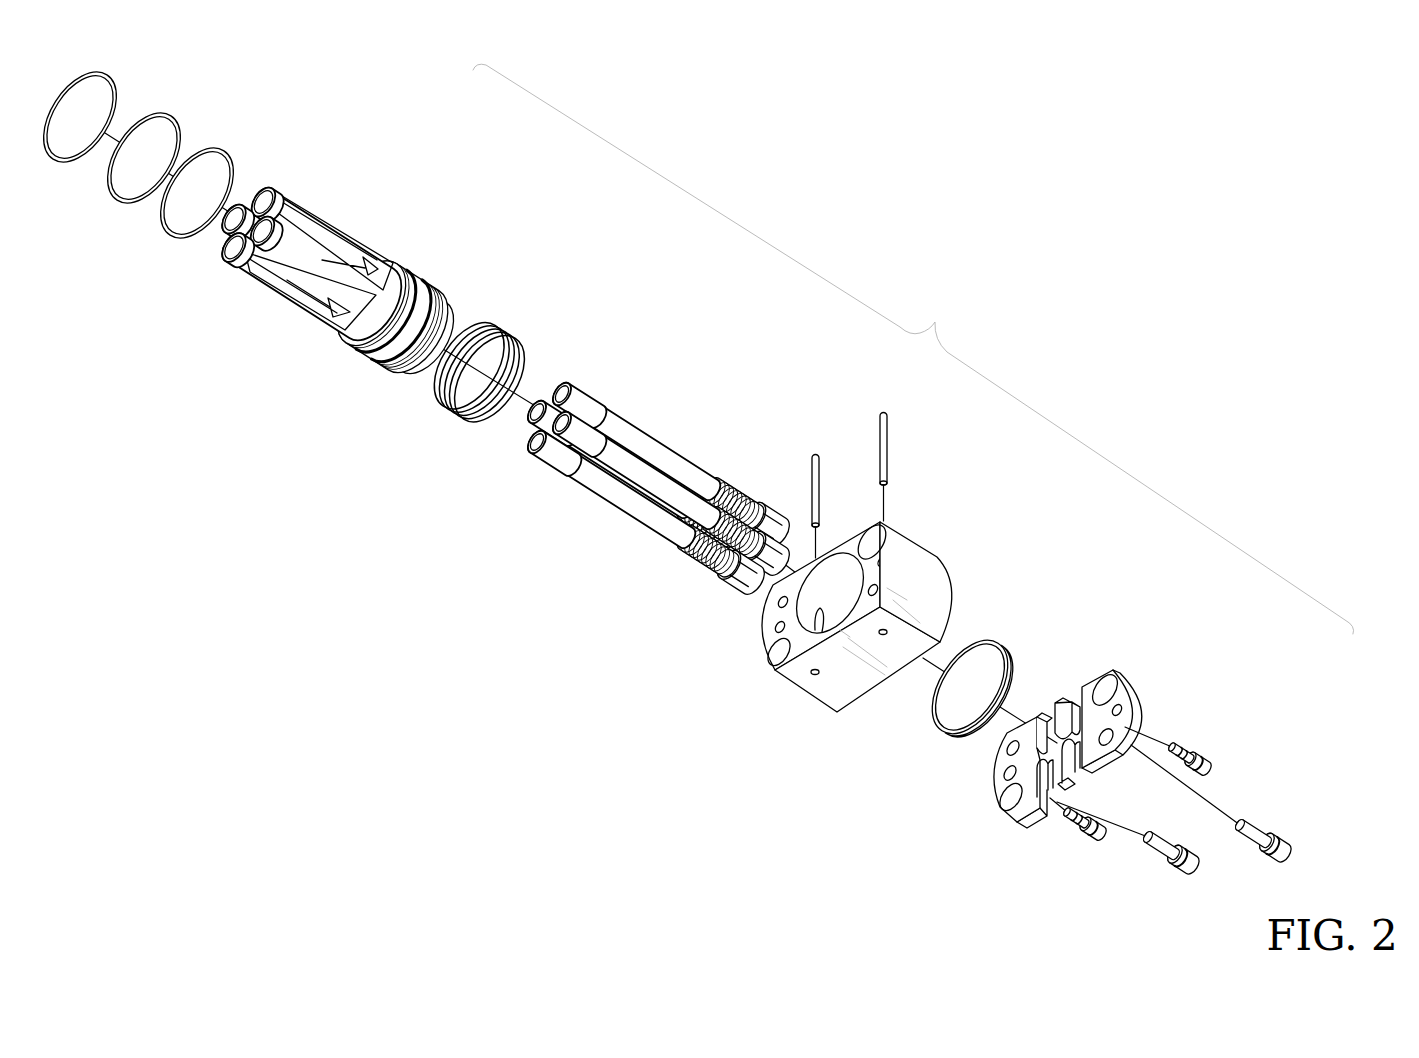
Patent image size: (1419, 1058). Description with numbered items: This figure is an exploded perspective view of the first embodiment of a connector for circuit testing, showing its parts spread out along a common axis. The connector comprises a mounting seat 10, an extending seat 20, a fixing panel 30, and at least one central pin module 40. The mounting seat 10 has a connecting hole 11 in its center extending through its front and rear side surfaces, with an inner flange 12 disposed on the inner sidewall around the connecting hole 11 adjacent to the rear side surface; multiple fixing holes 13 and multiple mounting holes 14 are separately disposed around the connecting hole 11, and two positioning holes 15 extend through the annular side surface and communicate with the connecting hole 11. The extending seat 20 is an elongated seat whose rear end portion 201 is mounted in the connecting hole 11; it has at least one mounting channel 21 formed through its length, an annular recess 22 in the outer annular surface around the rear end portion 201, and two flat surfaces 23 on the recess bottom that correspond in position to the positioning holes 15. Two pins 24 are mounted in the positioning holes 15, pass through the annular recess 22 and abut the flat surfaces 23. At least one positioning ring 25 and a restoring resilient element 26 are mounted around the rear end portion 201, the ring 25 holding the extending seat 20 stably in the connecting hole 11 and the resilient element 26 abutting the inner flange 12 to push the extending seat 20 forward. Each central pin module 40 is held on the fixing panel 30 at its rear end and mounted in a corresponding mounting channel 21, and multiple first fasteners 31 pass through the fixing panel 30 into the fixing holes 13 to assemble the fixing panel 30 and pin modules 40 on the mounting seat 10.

The mounting seat 10 is at (857, 678).
The connecting hole 11 is at (830, 573).
The inner flange 12 is at (948, 737).
The fixing holes 13 is at (882, 586).
The mounting holes 14 is at (875, 545).
The positioning holes 15 is at (815, 675).
The extending seat 20 is at (293, 290).
The rear end portion 201 is at (408, 372).
The mounting channel 21 is at (265, 205).
The annular recess 22 is at (373, 357).
The flat surfaces 23 is at (413, 270).
The pins 24 is at (887, 420).
The positioning ring 25 is at (92, 52).
The restoring resilient element 26 is at (467, 427).
The fixing panel 30 is at (1130, 700).
The first fasteners 31 is at (1258, 832).
The central pin module 40 is at (620, 517).